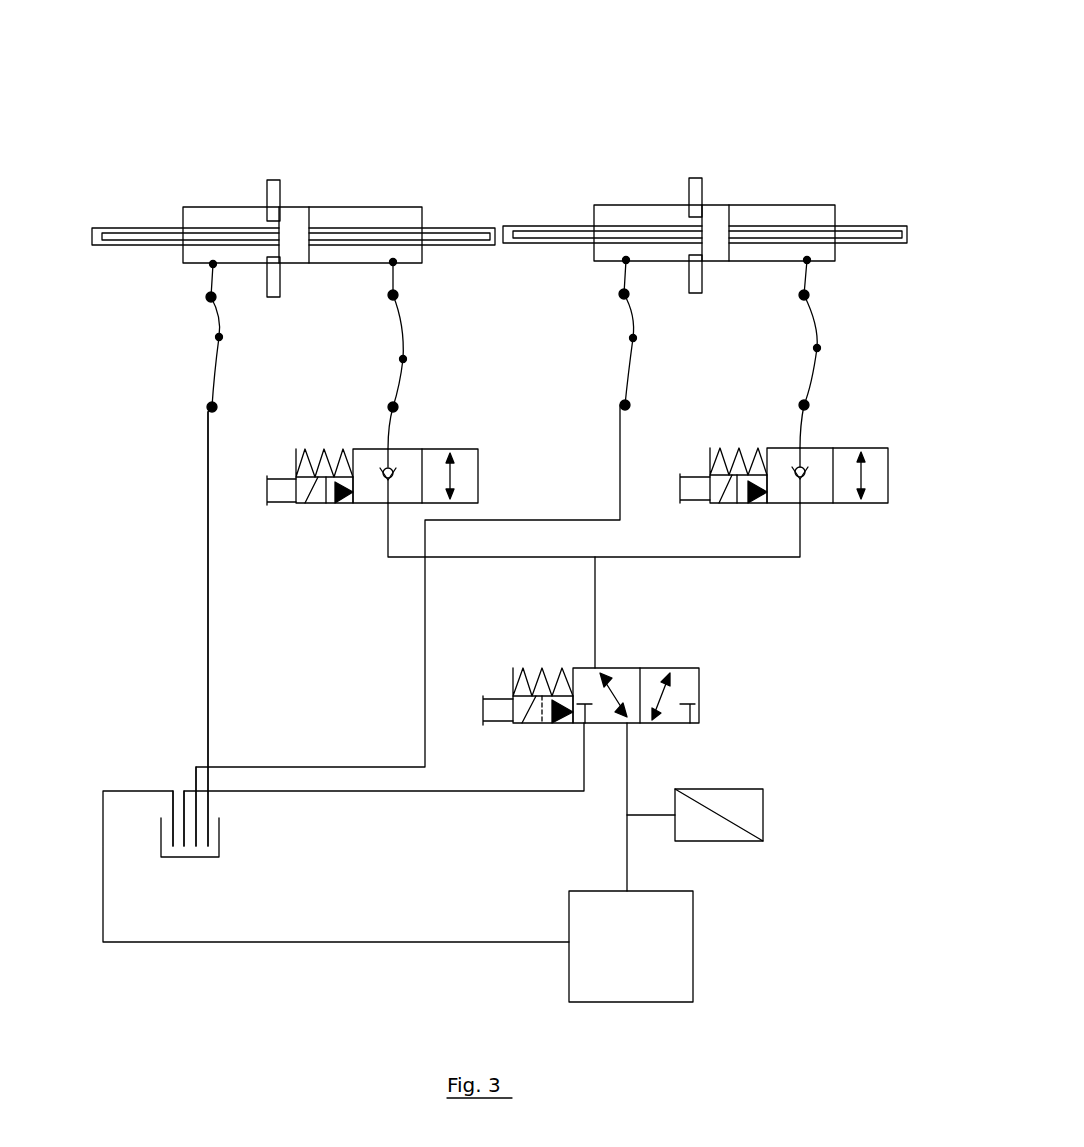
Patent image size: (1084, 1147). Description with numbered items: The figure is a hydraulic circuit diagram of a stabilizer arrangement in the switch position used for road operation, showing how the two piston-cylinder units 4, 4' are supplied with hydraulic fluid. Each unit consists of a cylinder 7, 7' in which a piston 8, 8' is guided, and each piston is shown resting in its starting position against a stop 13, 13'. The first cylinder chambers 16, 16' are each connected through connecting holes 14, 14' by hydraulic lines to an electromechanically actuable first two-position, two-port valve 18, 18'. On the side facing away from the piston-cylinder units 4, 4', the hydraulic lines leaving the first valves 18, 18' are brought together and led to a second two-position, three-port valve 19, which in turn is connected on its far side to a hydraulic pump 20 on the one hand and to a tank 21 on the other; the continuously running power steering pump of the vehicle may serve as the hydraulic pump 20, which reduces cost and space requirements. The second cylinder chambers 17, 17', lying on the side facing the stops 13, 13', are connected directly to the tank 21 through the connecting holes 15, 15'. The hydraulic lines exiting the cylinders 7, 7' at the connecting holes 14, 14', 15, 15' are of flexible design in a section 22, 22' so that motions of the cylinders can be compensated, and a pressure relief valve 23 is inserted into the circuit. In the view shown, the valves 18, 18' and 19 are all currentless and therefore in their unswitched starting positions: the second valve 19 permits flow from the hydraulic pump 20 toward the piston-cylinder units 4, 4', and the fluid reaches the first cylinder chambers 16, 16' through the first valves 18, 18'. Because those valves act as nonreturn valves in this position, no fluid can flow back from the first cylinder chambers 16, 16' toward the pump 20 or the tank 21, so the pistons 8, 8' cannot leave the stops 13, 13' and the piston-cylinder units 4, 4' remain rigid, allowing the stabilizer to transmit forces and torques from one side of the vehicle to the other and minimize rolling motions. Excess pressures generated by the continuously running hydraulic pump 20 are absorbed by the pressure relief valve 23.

The piston-cylinder unit 4' is at (293, 153).
The piston-cylinder unit 4 is at (705, 152).
The cylinder 7' is at (302, 189).
The cylinder 7 is at (714, 191).
The piston 8' is at (297, 189).
The piston 8 is at (728, 191).
The stop 13' is at (242, 206).
The stop 13 is at (677, 207).
The second cylinder chamber 17' is at (185, 180).
The second cylinder chamber 17 is at (602, 182).
The first cylinder chamber 16' is at (402, 180).
The first cylinder chamber 16 is at (818, 182).
The connecting hole 15' is at (162, 318).
The connecting hole 15 is at (582, 306).
The connecting hole 14' is at (432, 307).
The connecting hole 14 is at (843, 311).
The section 22' is at (307, 372).
The section 22 is at (720, 371).
The 2/2-way valve 18' is at (361, 533).
The 2/2-way valve 18 is at (784, 541).
The 3/2-way valve 19 is at (705, 657).
The hydraulic pump 20 is at (672, 968).
The tank 21 is at (213, 838).
The pressure relief valve 23 is at (730, 803).